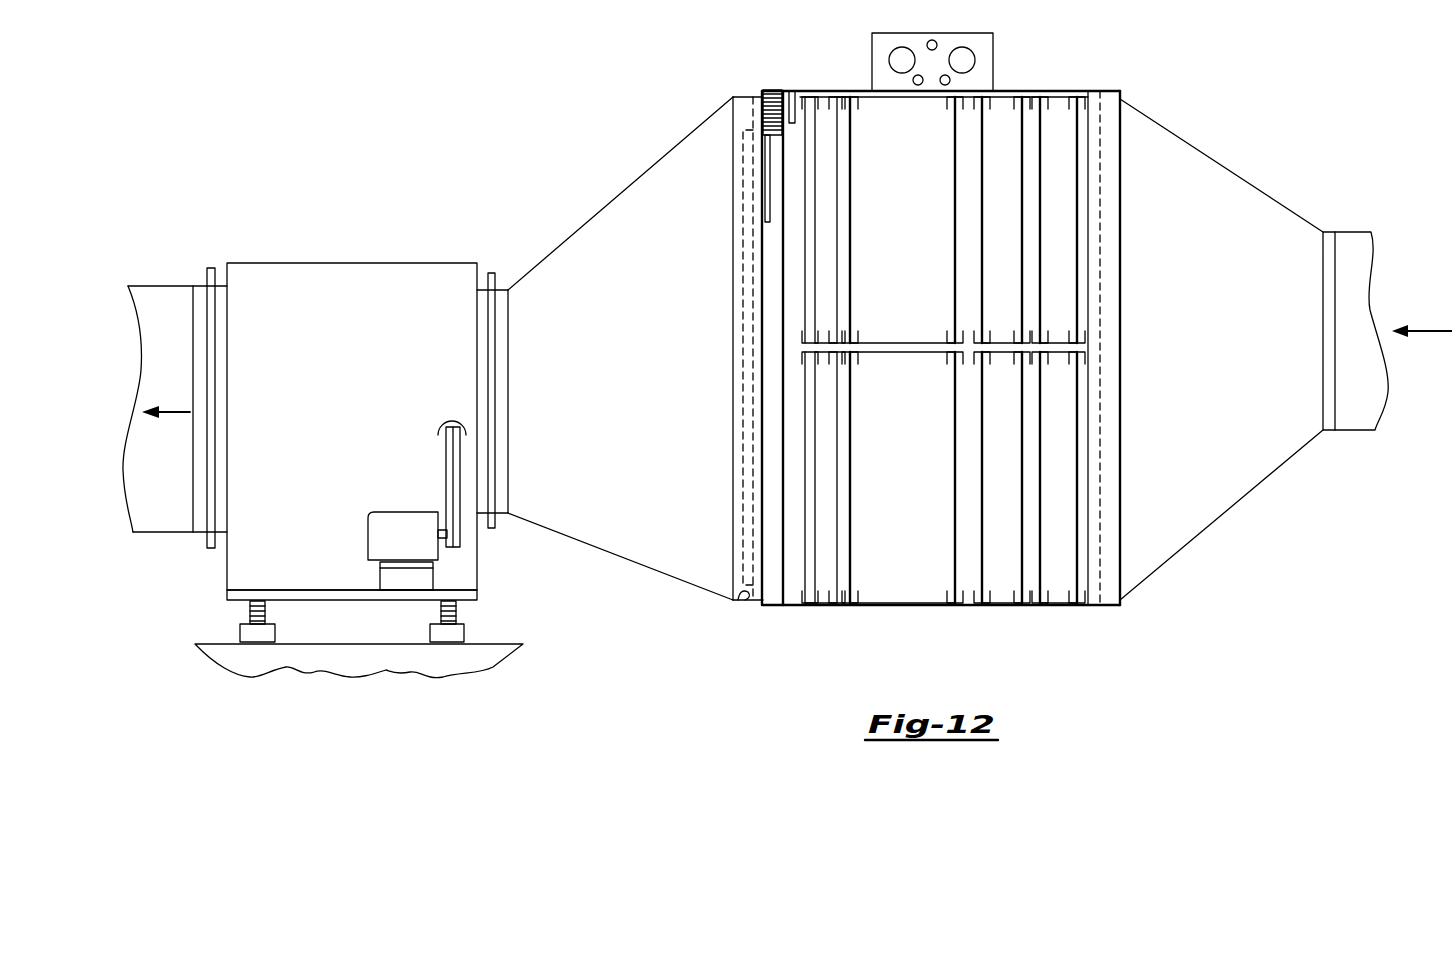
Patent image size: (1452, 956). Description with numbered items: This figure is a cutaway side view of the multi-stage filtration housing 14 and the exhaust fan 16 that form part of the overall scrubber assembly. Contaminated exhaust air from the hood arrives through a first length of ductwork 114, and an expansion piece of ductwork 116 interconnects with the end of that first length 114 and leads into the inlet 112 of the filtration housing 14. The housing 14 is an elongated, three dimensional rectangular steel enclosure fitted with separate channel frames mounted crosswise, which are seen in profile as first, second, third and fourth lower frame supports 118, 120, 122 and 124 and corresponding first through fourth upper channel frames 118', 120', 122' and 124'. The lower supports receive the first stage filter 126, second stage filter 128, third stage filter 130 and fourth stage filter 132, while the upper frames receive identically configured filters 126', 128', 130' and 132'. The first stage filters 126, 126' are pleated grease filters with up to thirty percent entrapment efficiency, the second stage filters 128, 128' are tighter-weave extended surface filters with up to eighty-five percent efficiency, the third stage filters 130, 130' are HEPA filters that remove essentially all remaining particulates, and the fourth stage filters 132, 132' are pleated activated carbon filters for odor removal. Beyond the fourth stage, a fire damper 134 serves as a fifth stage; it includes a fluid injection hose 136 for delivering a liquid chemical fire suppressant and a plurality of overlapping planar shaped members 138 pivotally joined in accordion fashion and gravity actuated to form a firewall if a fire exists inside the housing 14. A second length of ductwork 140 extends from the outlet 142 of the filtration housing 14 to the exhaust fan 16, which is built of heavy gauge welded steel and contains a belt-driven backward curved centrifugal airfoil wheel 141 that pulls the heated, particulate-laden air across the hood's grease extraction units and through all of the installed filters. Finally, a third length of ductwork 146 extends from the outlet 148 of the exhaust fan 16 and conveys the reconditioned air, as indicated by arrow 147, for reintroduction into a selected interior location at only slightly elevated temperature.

The filtration housing 14 is at (766, 30).
The exhaust fan 16 is at (377, 230).
The inlet 112 is at (1122, 158).
The first length of ductwork 114 is at (1350, 242).
The expansion piece of ductwork 116 is at (1248, 215).
The first upper and lower frame supports 118 is at (1058, 477).
The first upper channel frame 118' is at (1058, 186).
The second upper and lower frame supports 120 is at (1000, 505).
The second upper channel frame 120' is at (1002, 220).
The third upper and lower frame supports 122 is at (902, 477).
The third upper channel frame 122' is at (902, 220).
The fourth upper and lower frame supports 124 is at (823, 513).
The fourth upper channel frame 124' is at (823, 184).
The first stage filter 126 is at (1058, 477).
The first stage filter 126' is at (1058, 220).
The second stage filter 128 is at (1002, 477).
The second stage filter 128' is at (1002, 220).
The third stage filter 130 is at (902, 477).
The third stage filter 130' is at (902, 220).
The fourth stage filter 132 is at (763, 473).
The fourth stage filter 132' is at (758, 220).
The fire damper 134 is at (775, 392).
The fluid injection hose 136 is at (743, 258).
The planar shaped members 138 is at (772, 90).
The second length of ductwork 140 is at (568, 262).
The backward curved centrifugal airfoil wheel 141 is at (394, 469).
The outlet 142 is at (748, 593).
The third length of ductwork 146 is at (158, 296).
The arrow 147 is at (182, 412).
The outlet 148 is at (207, 298).